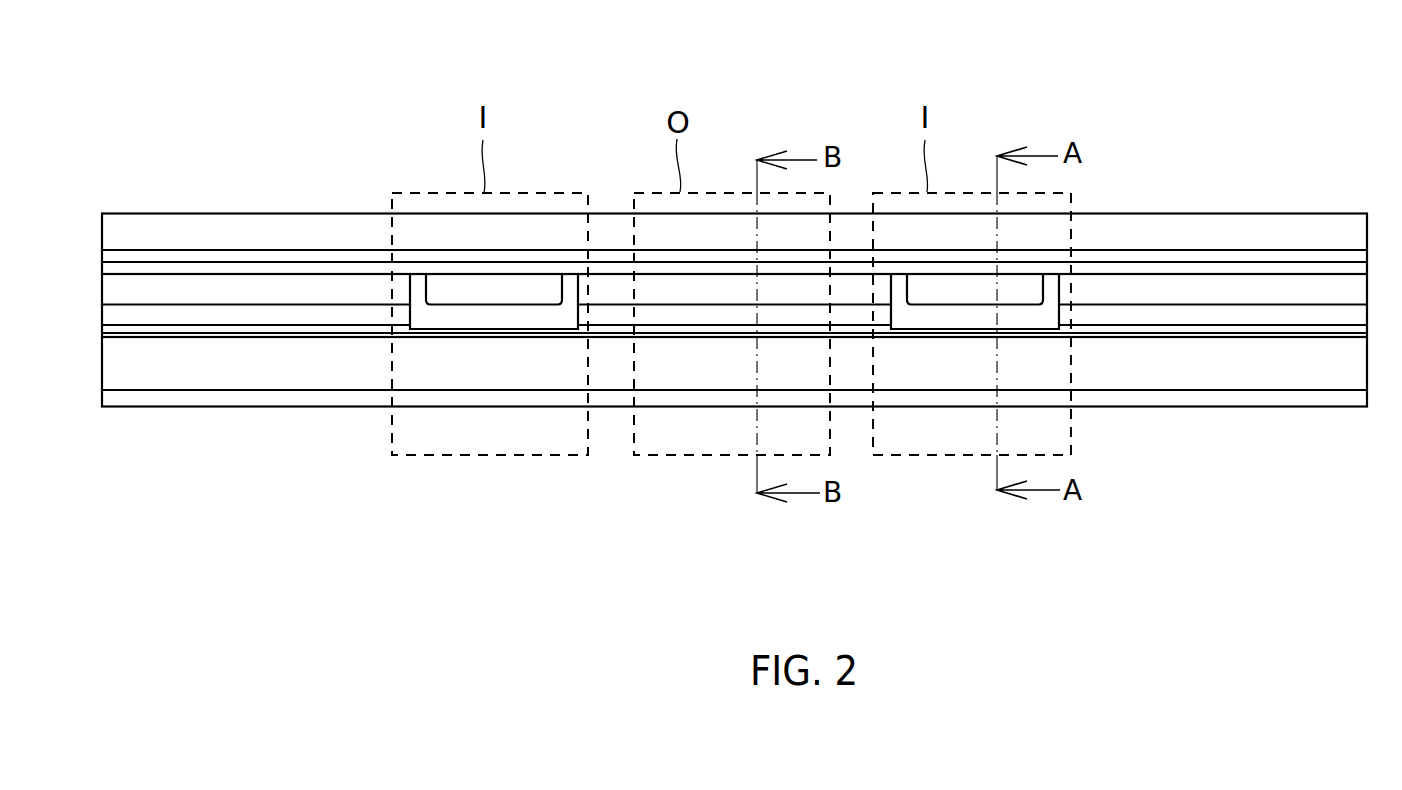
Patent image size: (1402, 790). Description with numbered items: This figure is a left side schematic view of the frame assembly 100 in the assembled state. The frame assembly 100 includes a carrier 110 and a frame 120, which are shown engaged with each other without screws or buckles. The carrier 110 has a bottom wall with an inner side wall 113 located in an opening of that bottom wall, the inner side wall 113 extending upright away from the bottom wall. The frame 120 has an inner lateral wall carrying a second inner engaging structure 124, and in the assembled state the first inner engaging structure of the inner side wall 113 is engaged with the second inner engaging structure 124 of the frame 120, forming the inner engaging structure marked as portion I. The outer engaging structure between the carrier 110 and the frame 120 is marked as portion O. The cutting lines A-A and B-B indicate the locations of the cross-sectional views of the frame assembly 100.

The frame assembly 100 is at (266, 89).
The carrier 110 is at (1170, 360).
The inner side wall 113 is at (487, 317).
The frame 120 is at (1168, 236).
The second inner engaging structure 124 is at (680, 292).